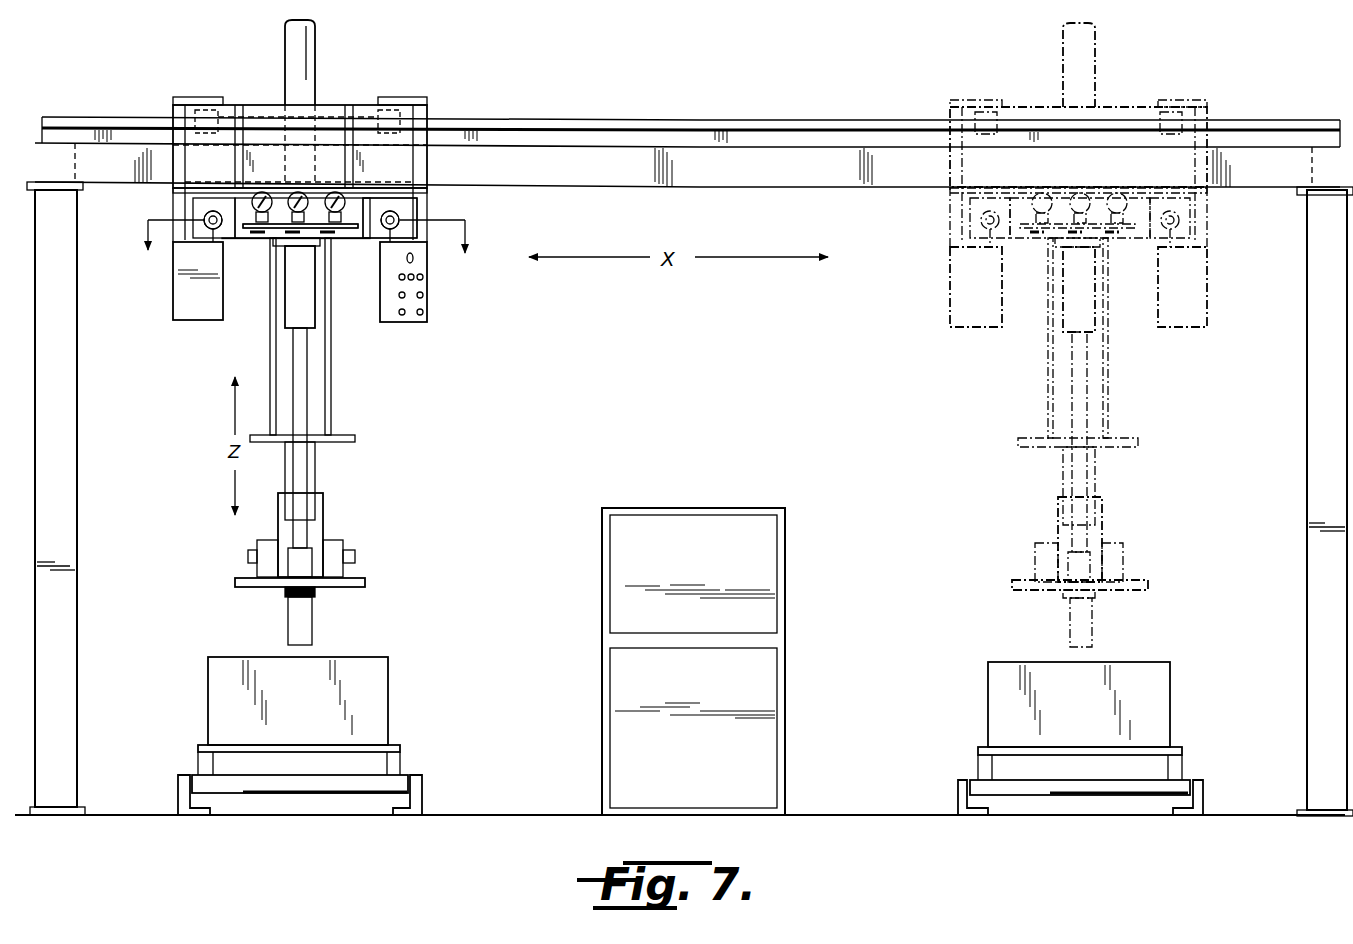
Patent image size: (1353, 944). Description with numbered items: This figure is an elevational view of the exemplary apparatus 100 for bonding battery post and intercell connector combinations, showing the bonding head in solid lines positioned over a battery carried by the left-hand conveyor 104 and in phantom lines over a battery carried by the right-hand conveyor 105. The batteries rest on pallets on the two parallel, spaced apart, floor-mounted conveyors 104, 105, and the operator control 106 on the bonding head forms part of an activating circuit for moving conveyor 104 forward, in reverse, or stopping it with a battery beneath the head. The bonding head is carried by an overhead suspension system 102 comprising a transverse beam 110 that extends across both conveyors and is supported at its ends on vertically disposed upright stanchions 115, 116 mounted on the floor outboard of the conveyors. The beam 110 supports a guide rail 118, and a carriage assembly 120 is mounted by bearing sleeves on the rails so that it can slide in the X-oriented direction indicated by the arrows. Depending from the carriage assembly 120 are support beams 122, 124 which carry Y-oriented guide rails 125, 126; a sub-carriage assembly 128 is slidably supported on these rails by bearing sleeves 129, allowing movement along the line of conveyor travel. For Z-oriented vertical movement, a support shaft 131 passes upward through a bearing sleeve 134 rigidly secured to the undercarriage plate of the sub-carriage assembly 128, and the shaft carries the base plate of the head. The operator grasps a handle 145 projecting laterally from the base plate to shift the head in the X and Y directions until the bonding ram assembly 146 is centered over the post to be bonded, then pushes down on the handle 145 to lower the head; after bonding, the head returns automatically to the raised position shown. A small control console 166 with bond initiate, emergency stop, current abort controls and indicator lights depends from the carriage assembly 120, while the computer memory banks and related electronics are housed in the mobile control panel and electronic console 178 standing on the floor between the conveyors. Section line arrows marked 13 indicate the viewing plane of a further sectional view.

The section line of FIG. 13 is at (300, 223).
The apparatus 100 is at (195, 634).
The overhead suspension system 102 is at (1262, 117).
The conveyor 104 is at (395, 782).
The conveyor 105 is at (1182, 782).
The operator control 106 is at (335, 542).
The beam 110 is at (735, 175).
The upright stanchion 115 is at (70, 512).
The upright stanchion 116 is at (1310, 556).
The guide rail 118 is at (665, 120).
The carriage assembly 120 is at (408, 94).
The depending support beam 122 is at (172, 232).
The depending support beam 124 is at (415, 225).
The guide rail 125 is at (218, 235).
The guide rail 126 is at (398, 228).
The sub-carriage assembly 128 is at (353, 215).
The bearing sleeve 129 is at (208, 212).
The support shaft 131 is at (308, 395).
The bearing sleeve 134 is at (283, 323).
The handle 145 is at (237, 583).
The bonding ram assembly 146 is at (310, 622).
The control console 166 is at (386, 325).
The mobile control panel and electronic console 178 is at (742, 490).